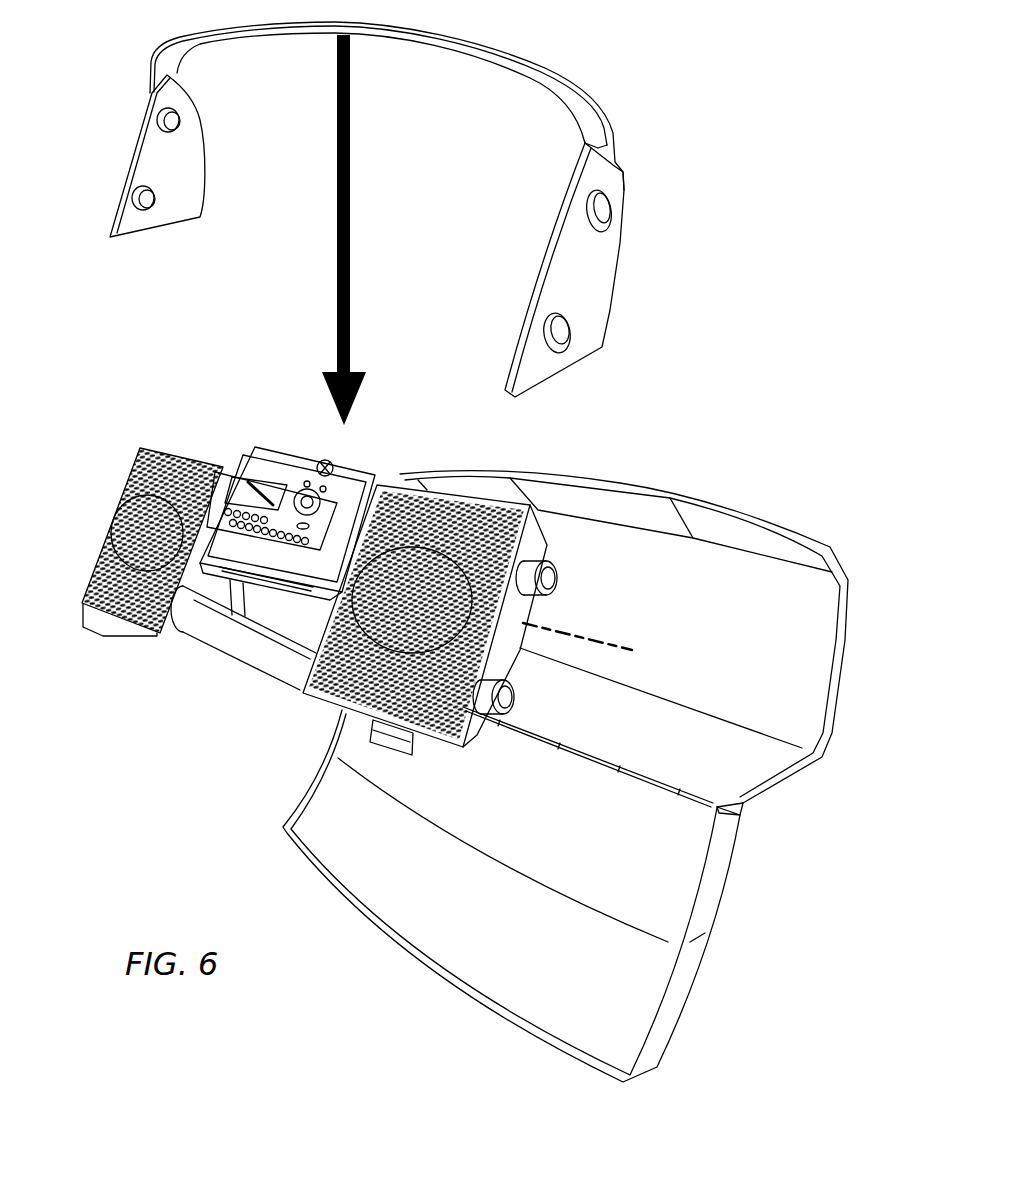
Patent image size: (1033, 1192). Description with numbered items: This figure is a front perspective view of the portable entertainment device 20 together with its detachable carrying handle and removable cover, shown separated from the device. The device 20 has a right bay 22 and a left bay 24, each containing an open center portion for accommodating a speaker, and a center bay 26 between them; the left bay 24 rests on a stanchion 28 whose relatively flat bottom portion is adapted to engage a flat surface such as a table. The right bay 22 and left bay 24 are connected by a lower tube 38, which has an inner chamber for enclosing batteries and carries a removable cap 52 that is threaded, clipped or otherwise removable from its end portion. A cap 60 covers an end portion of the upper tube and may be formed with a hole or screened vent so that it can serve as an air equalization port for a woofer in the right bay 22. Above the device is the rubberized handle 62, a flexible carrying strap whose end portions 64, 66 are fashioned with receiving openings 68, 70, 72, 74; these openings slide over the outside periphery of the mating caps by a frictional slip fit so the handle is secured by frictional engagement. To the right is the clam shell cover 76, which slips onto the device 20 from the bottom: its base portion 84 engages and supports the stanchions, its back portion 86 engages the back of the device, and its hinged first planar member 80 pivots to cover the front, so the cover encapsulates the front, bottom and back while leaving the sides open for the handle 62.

The portable entertainment device 20 is at (128, 435).
The right bay 22 is at (315, 695).
The left bay 24 is at (108, 519).
The center bay 26 is at (398, 757).
The stanchion 28 is at (97, 634).
The lower tube 38 is at (223, 620).
The removable cap 52 is at (512, 694).
The cap 60 is at (556, 576).
The rubberized handle 62 is at (562, 73).
The end portion 64 is at (140, 237).
The end portion 66 is at (553, 377).
The receiving opening 68 is at (610, 213).
The receiving opening 70 is at (565, 333).
The receiving opening 72 is at (178, 125).
The receiving opening 74 is at (152, 206).
The clam shell cover 76 is at (830, 527).
The first planar member 80 is at (529, 834).
The base portion 84 is at (663, 750).
The back portion 86 is at (705, 634).